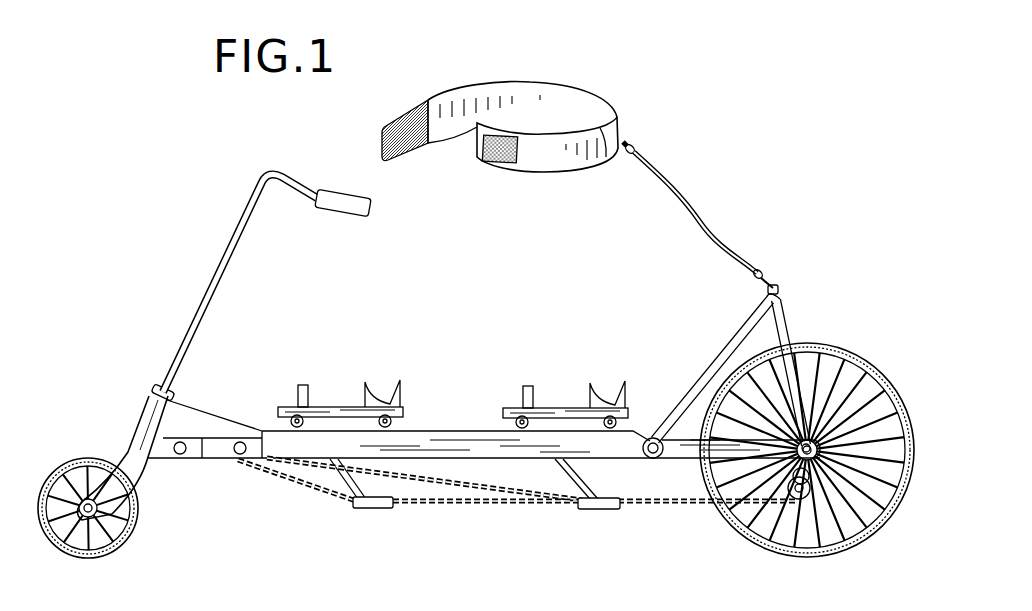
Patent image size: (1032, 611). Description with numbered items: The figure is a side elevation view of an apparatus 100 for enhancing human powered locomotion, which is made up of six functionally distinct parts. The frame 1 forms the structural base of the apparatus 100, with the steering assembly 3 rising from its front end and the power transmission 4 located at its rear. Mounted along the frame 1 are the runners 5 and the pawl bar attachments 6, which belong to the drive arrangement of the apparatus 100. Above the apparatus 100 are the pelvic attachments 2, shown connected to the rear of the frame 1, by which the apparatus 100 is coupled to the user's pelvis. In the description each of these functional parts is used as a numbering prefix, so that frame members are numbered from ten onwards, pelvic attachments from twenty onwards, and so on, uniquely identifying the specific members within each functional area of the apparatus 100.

The frame 1 is at (120, 431).
The pelvic attachments 2 is at (492, 70).
The steering assembly 3 is at (272, 160).
The power transmission 4 is at (854, 336).
The runners 5 is at (620, 513).
The pawl bar attachments 6 is at (343, 506).
The apparatus 100 is at (738, 176).